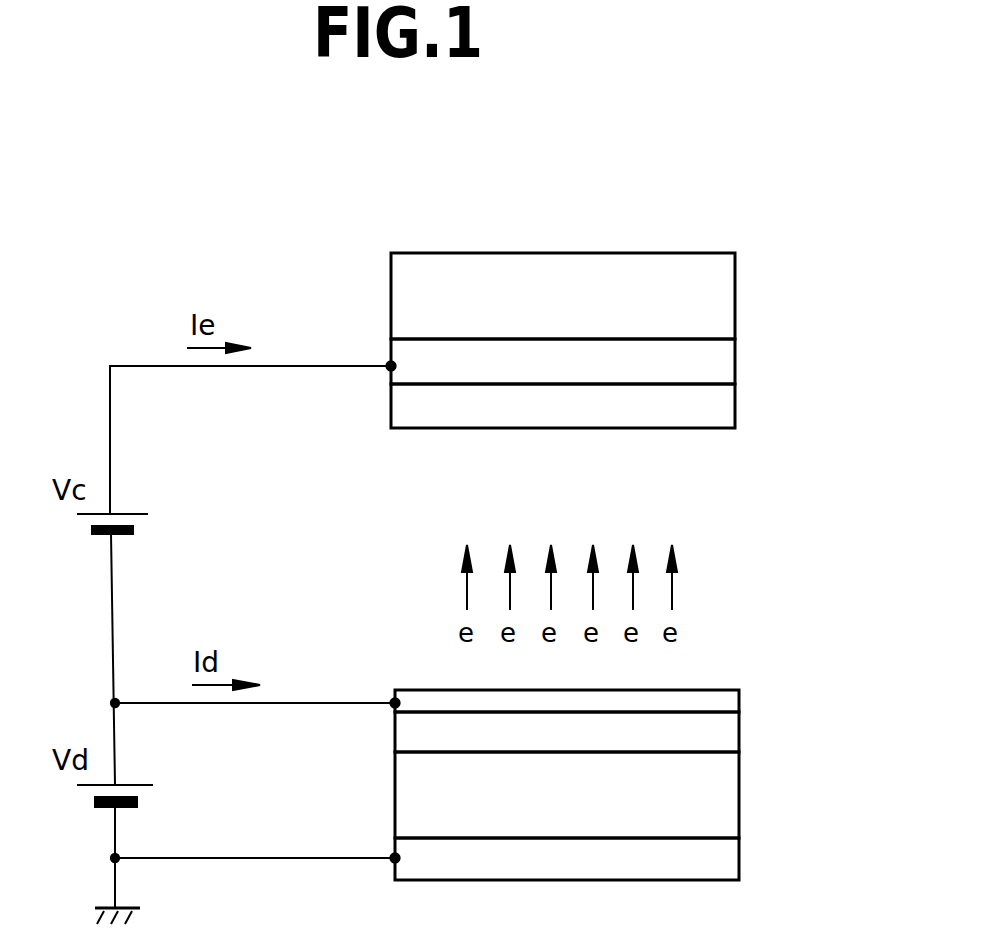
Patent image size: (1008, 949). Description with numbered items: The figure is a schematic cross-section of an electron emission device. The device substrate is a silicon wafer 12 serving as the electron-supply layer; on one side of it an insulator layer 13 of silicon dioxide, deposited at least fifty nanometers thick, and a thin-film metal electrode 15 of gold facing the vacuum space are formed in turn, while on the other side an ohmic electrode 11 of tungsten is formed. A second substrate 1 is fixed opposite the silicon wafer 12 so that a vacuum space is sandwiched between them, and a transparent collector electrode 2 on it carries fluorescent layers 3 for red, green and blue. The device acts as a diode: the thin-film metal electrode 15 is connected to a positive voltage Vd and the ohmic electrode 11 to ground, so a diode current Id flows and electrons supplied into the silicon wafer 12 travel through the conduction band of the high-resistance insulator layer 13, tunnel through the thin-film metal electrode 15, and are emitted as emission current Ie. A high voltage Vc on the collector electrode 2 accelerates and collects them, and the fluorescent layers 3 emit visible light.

The second substrate 1 is at (725, 291).
The collector electrode 2 is at (725, 359).
The fluorescent layers 3 is at (725, 397).
The ohmic electrode 11 is at (735, 862).
The silicon wafer 12 is at (735, 800).
The insulator layer 13 is at (730, 732).
The thin-film metal electrode 15 is at (732, 700).